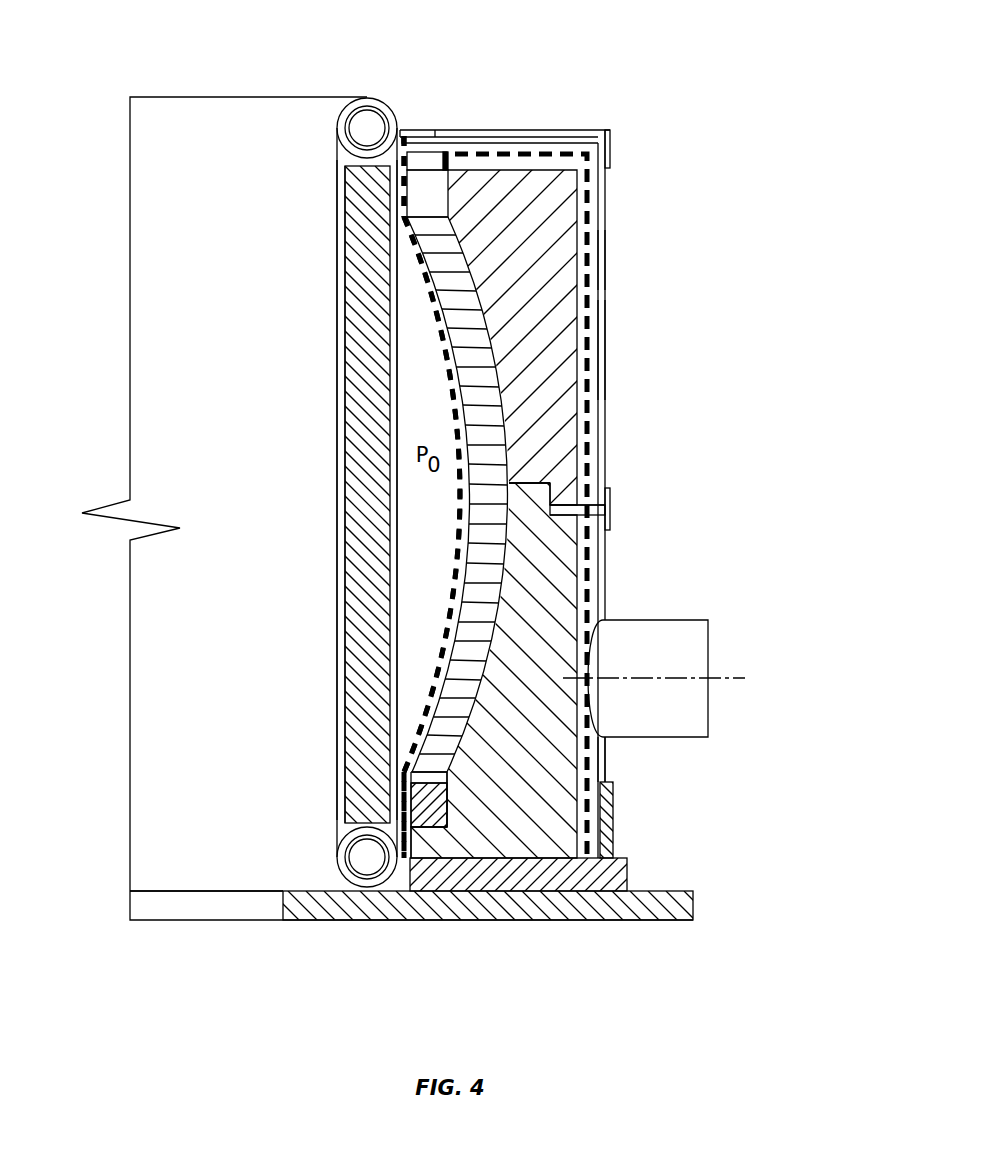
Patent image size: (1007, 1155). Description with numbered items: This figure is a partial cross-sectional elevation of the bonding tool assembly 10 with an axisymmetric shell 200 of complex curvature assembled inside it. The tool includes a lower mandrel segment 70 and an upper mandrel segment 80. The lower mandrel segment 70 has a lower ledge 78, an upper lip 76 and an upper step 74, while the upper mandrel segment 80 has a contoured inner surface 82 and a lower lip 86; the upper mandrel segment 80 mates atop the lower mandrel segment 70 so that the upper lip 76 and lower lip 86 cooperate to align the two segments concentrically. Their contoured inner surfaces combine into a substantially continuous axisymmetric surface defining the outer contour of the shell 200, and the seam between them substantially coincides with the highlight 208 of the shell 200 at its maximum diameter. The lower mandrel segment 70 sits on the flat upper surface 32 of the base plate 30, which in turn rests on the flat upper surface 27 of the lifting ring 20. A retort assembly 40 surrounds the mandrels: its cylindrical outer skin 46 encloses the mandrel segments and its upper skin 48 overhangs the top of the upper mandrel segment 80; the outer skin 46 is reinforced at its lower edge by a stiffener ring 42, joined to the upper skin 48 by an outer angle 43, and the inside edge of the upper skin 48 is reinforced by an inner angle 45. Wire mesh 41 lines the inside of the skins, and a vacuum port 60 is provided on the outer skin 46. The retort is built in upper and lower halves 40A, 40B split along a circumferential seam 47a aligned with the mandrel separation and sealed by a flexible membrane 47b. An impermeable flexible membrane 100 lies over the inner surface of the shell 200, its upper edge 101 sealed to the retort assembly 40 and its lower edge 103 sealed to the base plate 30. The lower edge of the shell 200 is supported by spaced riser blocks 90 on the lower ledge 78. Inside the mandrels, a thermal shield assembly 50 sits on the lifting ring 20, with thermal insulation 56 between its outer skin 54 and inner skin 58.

The bonding tool assembly 10 is at (550, 92).
The lifting ring 20 is at (632, 920).
The flat upper surface 27 is at (307, 890).
The base plate 30 is at (628, 872).
The flat upper surface 32 is at (406, 830).
The retort assembly 40 is at (605, 213).
The upper half 40A is at (606, 343).
The lower half 40B is at (607, 760).
The wire mesh 41 is at (590, 325).
The stiffener ring 42 is at (613, 817).
The outer angle 43 is at (606, 129).
The inner angle 45 is at (420, 131).
The outer skin 46 is at (607, 257).
The circumferential seam 47a is at (600, 508).
The membrane 47b is at (606, 509).
The upper skin 48 is at (480, 129).
The thermal shield assembly 50 is at (345, 213).
The outer skin 54 is at (397, 540).
The thermal insulation 56 is at (365, 343).
The inner skin 58 is at (330, 635).
The vacuum port 60 is at (690, 712).
The lower mandrel segment 70 is at (553, 550).
The upper step 74 is at (565, 508).
The upper lip 76 is at (533, 505).
The lower ledge 78 is at (447, 855).
The upper mandrel segment 80 is at (540, 242).
The contoured inner surface 82 is at (453, 370).
The lower lip 86 is at (565, 477).
The riser blocks 90 is at (444, 809).
The flexible membrane 100 is at (457, 520).
The upper edge 101 is at (403, 155).
The lower edge 103 is at (407, 835).
The shell 200 is at (413, 253).
The highlight 208 is at (563, 478).